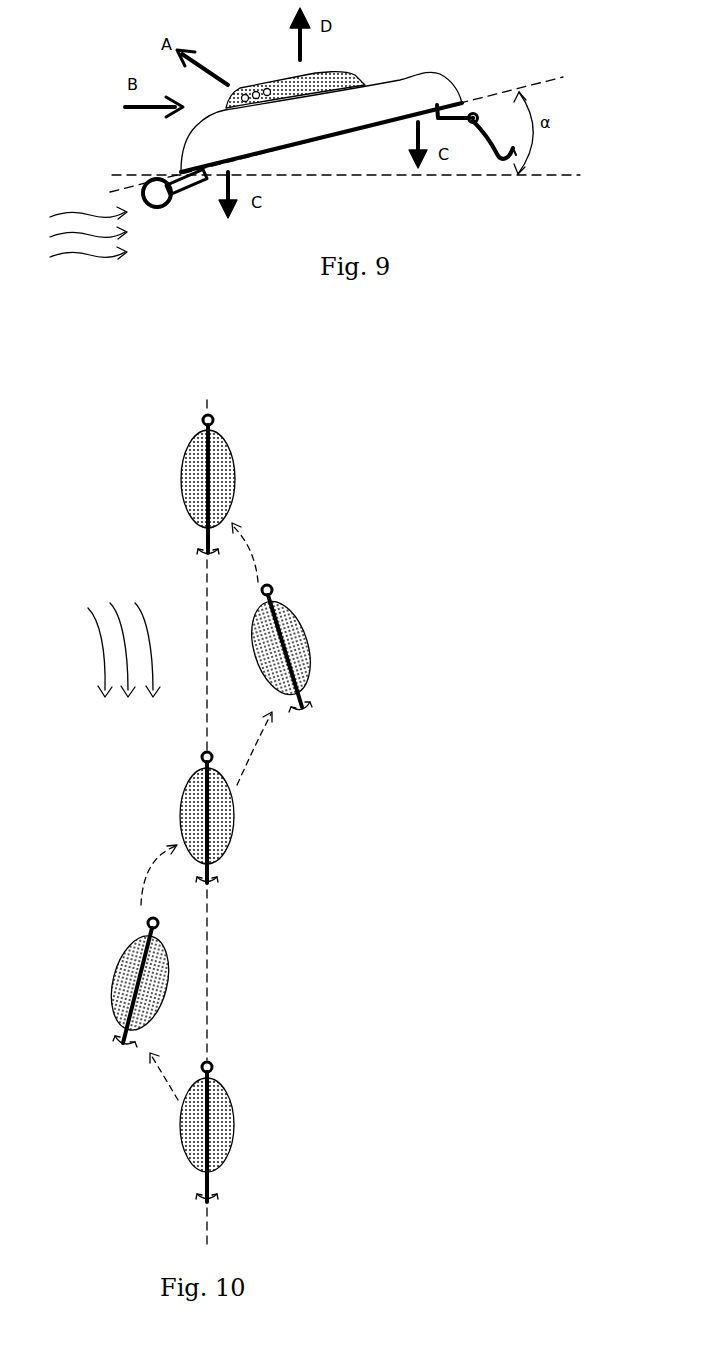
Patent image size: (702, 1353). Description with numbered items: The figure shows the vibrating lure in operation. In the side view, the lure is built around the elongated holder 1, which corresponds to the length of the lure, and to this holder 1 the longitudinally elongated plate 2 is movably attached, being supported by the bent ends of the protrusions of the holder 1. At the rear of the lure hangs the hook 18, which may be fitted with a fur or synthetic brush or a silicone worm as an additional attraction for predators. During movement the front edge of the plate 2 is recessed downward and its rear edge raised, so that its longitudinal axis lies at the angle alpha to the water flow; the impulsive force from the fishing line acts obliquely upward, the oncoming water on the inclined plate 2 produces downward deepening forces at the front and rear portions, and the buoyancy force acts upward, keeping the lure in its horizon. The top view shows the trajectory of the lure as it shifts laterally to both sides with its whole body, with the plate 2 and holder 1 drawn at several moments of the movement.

In FIG. 9, the holder 1 is at (337, 73).
In FIG. 10, the holder 1 is at (278, 613).
In FIG. 9, the plate 2 is at (400, 102).
In FIG. 10, the plate 2 is at (290, 627).
In FIG. 9, the hook 18 is at (502, 162).